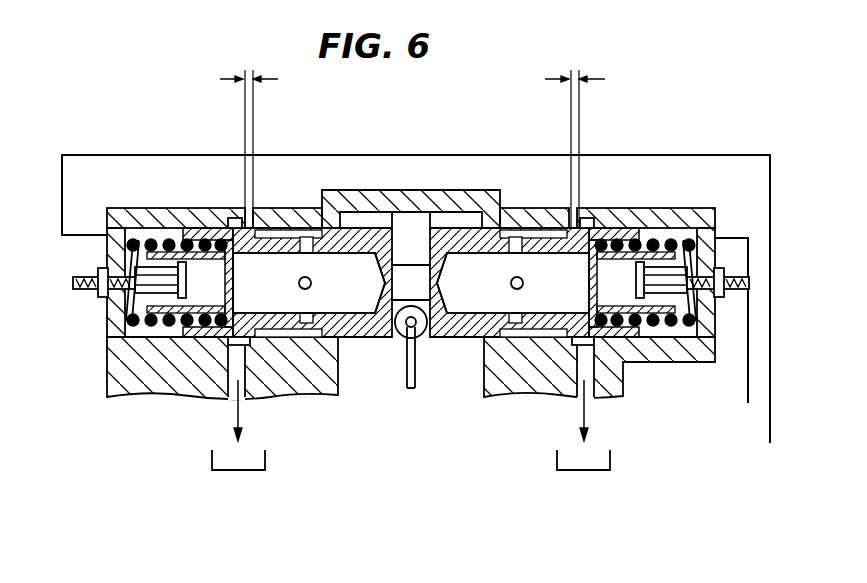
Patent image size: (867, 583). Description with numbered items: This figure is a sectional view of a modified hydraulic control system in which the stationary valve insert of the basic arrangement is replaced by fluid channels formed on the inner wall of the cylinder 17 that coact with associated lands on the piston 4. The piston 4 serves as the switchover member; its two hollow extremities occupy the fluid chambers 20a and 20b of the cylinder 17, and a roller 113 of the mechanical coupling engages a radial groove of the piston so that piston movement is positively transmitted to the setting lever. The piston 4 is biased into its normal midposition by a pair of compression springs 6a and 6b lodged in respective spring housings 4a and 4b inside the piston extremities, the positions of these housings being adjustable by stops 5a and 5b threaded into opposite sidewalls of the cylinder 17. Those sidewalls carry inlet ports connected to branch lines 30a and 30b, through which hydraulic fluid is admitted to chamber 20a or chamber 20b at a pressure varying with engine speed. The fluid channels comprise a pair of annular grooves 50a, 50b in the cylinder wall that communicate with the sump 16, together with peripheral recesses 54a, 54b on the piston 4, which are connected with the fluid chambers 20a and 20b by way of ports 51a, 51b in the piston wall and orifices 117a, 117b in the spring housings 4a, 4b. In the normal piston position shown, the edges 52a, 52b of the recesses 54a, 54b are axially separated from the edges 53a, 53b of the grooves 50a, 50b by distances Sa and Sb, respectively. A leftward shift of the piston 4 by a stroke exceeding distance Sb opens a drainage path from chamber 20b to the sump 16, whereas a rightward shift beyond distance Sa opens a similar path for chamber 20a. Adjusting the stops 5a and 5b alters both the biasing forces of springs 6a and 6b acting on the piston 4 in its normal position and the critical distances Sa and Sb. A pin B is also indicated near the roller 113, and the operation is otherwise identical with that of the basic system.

The piston 4 is at (445, 232).
The spring housing 4a is at (673, 262).
The spring housing 4b is at (112, 272).
The stop 5a is at (698, 300).
The stop 5b is at (127, 288).
The compression spring 6a is at (670, 343).
The compression spring 6b is at (123, 329).
The sump 16 is at (242, 463).
The cylinder 17 is at (390, 200).
The fluid chamber 20a is at (673, 237).
The fluid chamber 20b is at (135, 236).
The branch line 30a is at (750, 366).
The branch line 30b is at (769, 424).
The annular groove 50a is at (580, 223).
The annular groove 50b is at (235, 218).
The port 51a is at (522, 241).
The port 51b is at (307, 243).
The edge of recess 52a is at (567, 240).
The edge of recess 52b is at (246, 230).
The edge of groove 53a is at (575, 346).
The edge of groove 53b is at (225, 350).
The peripheral recess 54a is at (530, 236).
The peripheral recess 54b is at (293, 237).
The roller 113 is at (400, 332).
The orifice 117a is at (643, 305).
The orifice 117b is at (223, 306).
The pin B is at (409, 378).
The distance s_a Sa is at (577, 80).
The distance s_b Sb is at (249, 139).